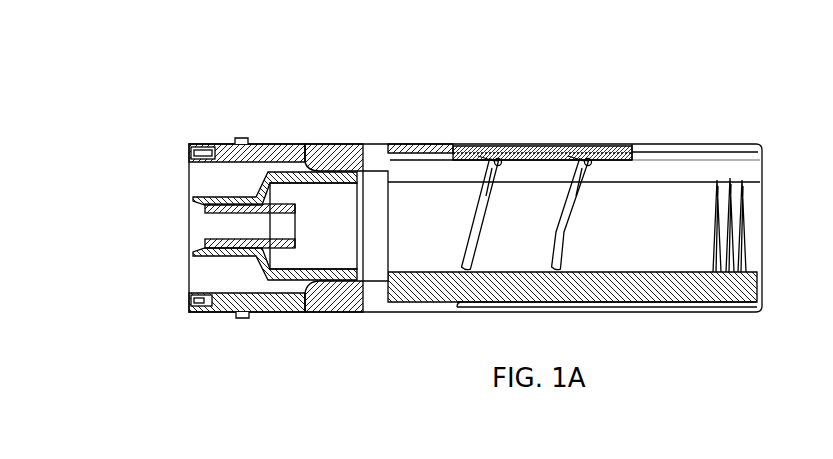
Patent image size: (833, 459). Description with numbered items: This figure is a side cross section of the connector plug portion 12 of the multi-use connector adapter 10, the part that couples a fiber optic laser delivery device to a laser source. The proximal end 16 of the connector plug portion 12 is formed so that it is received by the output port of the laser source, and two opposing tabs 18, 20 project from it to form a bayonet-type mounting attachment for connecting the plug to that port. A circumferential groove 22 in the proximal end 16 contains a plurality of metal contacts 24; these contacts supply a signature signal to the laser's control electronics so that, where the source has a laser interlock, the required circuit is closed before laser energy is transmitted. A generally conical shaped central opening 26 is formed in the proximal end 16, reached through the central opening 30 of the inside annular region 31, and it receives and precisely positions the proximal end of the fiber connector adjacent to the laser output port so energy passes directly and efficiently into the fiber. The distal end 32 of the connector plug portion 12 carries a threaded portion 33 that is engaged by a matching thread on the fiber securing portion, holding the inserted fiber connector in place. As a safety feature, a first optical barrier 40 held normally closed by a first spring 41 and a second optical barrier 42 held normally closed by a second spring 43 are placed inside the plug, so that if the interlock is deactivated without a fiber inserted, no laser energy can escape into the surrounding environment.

The multi-use connector adapter 10 is at (529, 107).
The connector plug portion 12 is at (360, 312).
The proximal end 16 is at (188, 178).
The tab 18 is at (242, 138).
The tab 20 is at (240, 318).
The circumferential groove 22 is at (212, 308).
The metal contacts 24 is at (202, 148).
The conical shaped central opening 26 is at (212, 255).
The central opening 30 is at (218, 223).
The inside annular region 31 is at (313, 226).
The distal end 32 is at (732, 160).
The threaded portion 33 is at (752, 270).
The first optical barrier 40 is at (478, 237).
The first spring 41 is at (483, 150).
The second optical barrier 42 is at (565, 217).
The second spring 43 is at (582, 150).